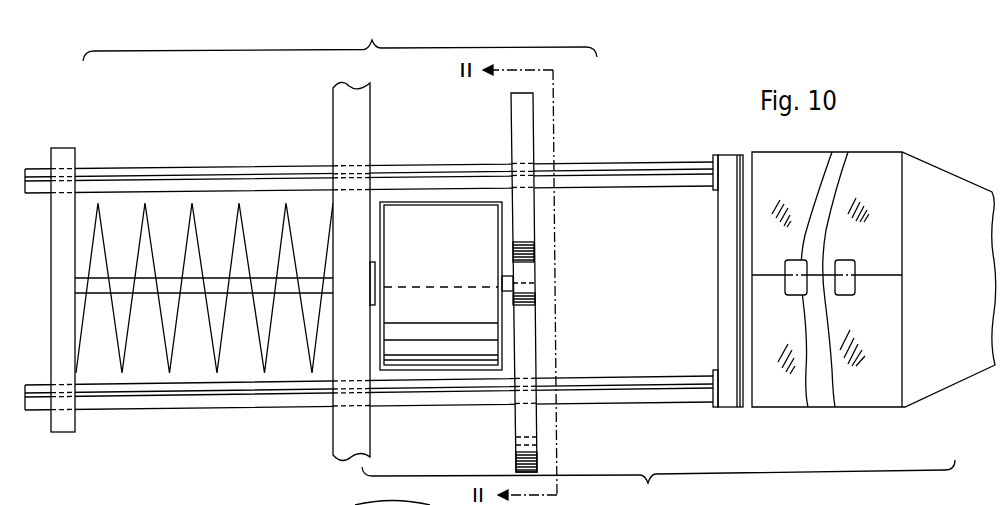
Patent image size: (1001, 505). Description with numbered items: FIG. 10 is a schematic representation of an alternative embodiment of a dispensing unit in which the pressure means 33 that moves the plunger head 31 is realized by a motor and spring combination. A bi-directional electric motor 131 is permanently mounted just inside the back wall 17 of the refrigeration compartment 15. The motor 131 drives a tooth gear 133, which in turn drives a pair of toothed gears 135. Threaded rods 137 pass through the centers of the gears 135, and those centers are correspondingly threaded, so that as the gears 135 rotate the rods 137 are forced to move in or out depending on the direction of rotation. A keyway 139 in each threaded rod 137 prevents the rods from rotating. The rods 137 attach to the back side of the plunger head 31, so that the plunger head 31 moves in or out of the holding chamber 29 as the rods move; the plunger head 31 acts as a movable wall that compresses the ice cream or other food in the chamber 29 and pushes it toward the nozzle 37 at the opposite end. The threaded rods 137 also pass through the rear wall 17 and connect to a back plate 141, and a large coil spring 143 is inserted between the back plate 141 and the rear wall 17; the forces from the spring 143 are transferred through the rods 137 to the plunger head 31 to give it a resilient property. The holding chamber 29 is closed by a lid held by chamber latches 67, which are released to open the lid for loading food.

The refrigeration compartment 15 is at (658, 482).
The back wall 17 is at (347, 428).
The holding chamber 29 is at (797, 400).
The plunger head 31 is at (739, 135).
The pressure means 33 is at (340, 40).
The nozzle 37 is at (928, 378).
The chamber latches 67 is at (797, 244).
The bi-directional electric motor 131 is at (465, 345).
The tooth gear 133 is at (535, 283).
The toothed gears 135 is at (518, 223).
The threaded rods 137 is at (597, 163).
The keyway 139 is at (658, 178).
The back plate 141 is at (75, 413).
The spring 143 is at (173, 350).